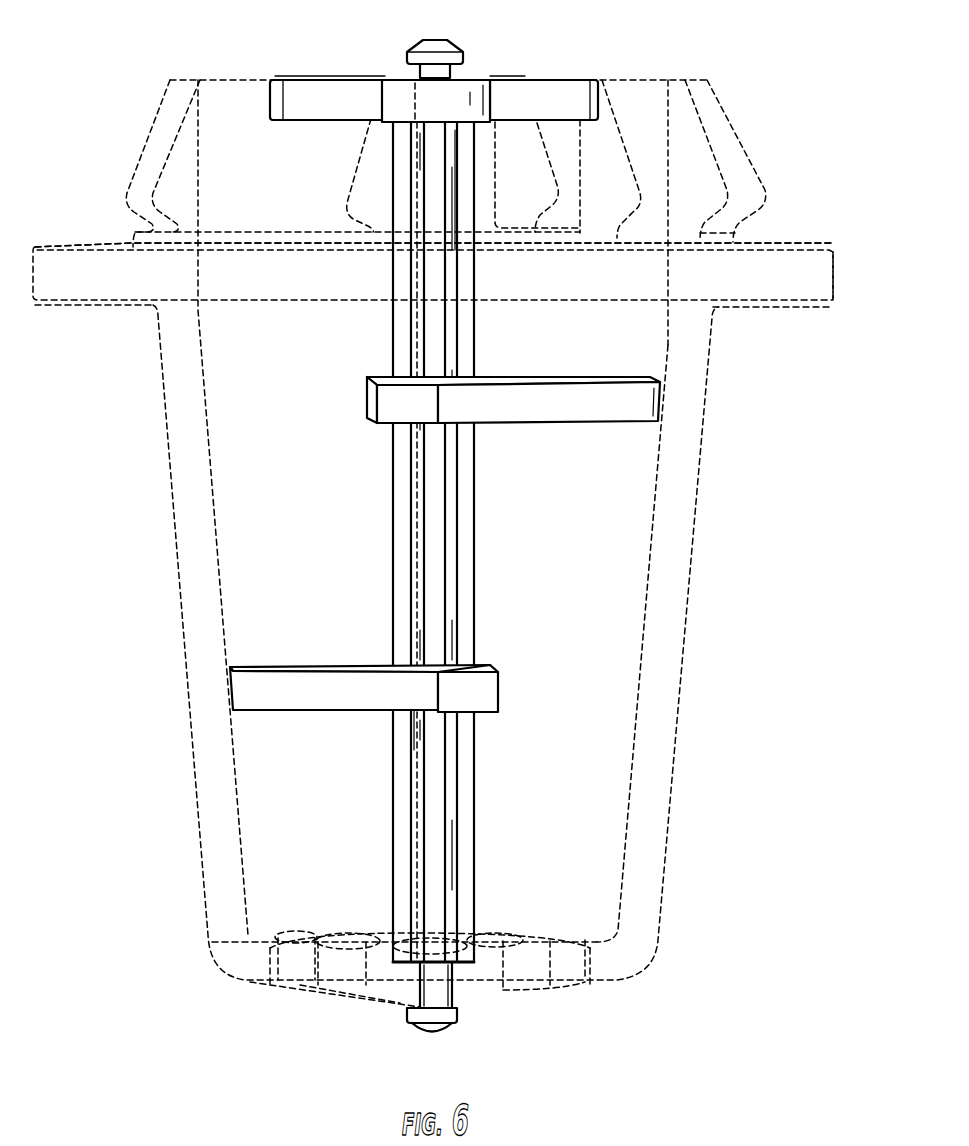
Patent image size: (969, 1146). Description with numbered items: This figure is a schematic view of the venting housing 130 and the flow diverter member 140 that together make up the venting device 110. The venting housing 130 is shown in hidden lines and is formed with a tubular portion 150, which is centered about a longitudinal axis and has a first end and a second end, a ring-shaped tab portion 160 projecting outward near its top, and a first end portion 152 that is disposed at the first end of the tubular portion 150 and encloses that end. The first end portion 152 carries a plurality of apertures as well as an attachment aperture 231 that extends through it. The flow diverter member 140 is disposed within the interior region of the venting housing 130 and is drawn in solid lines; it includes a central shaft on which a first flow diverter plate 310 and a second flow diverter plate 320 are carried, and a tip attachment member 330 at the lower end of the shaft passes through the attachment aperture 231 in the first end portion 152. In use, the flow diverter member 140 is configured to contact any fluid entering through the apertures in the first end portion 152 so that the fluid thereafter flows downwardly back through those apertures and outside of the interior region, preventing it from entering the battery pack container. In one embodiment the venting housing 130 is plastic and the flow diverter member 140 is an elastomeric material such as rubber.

The venting device 110 is at (803, 80).
The venting housing 130 is at (834, 249).
The ring-shaped tab portion 160 is at (833, 278).
The tubular portion 150 is at (692, 522).
The first end portion 152 is at (582, 983).
The flow diverter member 140 is at (269, 693).
The first flow diverter plate 310 is at (490, 685).
The second flow diverter plate 320 is at (580, 410).
The tip attachment member 330 is at (440, 1023).
The attachment aperture 231 is at (450, 983).